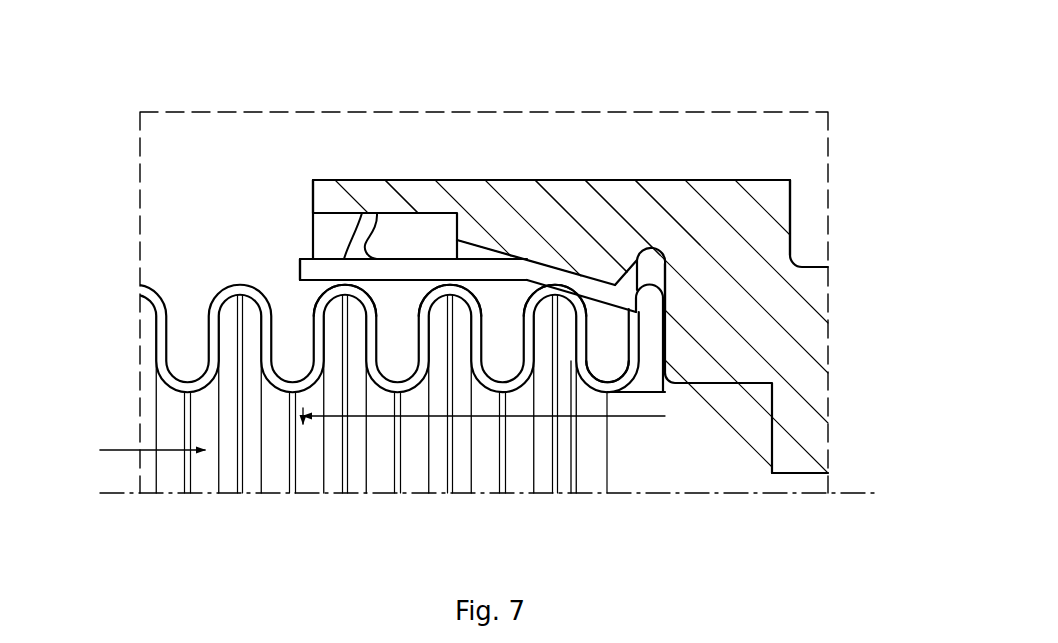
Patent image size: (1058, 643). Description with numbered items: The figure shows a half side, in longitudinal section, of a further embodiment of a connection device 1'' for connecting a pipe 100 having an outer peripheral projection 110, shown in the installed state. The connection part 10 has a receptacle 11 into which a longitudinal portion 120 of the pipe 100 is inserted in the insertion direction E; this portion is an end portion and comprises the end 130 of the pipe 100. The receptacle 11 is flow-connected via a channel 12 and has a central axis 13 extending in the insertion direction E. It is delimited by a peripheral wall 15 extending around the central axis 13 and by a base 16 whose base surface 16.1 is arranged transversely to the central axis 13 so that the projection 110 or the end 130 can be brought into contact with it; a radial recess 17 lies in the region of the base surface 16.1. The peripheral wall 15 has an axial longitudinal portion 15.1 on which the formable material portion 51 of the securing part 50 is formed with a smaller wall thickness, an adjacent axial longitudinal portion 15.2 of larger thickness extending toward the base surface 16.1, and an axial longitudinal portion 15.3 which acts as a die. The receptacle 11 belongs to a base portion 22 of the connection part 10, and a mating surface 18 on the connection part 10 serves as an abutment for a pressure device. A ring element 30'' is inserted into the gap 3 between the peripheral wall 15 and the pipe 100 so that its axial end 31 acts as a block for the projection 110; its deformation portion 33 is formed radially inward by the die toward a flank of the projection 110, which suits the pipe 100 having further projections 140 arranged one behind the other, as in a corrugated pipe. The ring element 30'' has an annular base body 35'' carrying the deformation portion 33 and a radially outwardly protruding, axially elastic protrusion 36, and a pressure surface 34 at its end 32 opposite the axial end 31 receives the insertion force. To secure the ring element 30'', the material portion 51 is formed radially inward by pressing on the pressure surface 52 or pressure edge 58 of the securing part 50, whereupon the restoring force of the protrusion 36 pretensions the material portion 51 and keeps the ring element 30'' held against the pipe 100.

The connection device 1'' is at (506, 271).
The gap 3 is at (428, 233).
The connection part 10 is at (700, 200).
The receptacle 11 is at (550, 253).
The channel 12 is at (807, 493).
The central axis 13 is at (847, 490).
The peripheral wall 15 is at (565, 200).
The axial longitudinal portion 15.1 is at (460, 238).
The axial longitudinal portion 15.2 is at (605, 200).
The axial longitudinal portion 15.3 is at (605, 200).
The base 16 is at (668, 357).
The base surface 16.1 is at (668, 302).
The radial recess 17 is at (727, 177).
The mating surface 18 is at (790, 195).
The base portion 22 is at (655, 247).
The ring element 30'' is at (330, 211).
The axial end 31 is at (627, 313).
The end 32 is at (297, 275).
The deformation portion 33 is at (548, 272).
The pressure surface 34 is at (298, 257).
The annular base body 35'' is at (405, 315).
The protrusion 36 is at (350, 213).
The securing part 50 is at (402, 178).
The material portion 51 is at (328, 200).
The pressure surface 52 is at (385, 197).
The pressure edge 58 is at (313, 180).
The pipe 100 is at (148, 335).
The projection 110 is at (651, 337).
The longitudinal portion 120 is at (522, 416).
The end 130 is at (668, 395).
The further projections 140 is at (345, 300).
The insertion direction E is at (146, 415).